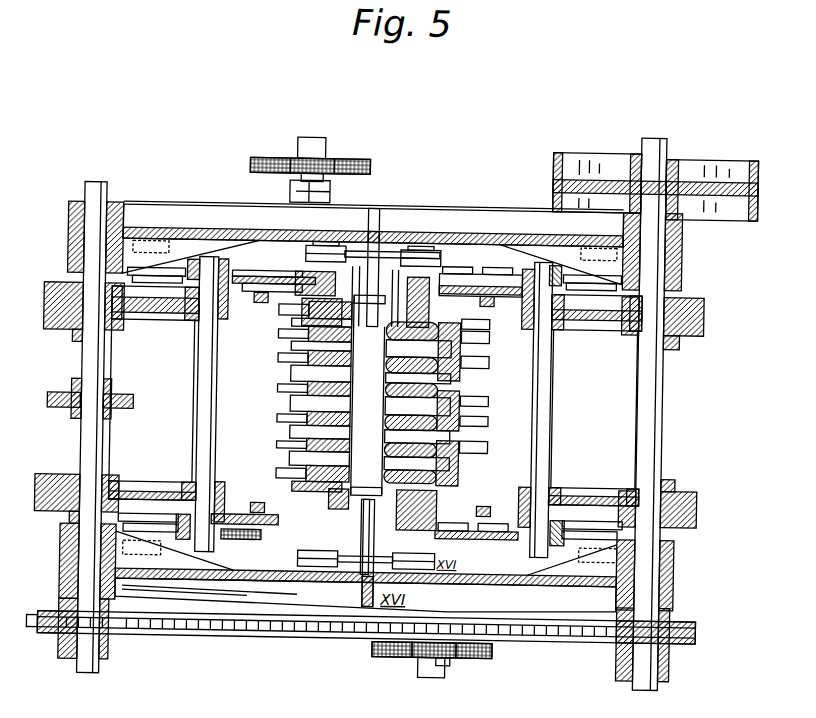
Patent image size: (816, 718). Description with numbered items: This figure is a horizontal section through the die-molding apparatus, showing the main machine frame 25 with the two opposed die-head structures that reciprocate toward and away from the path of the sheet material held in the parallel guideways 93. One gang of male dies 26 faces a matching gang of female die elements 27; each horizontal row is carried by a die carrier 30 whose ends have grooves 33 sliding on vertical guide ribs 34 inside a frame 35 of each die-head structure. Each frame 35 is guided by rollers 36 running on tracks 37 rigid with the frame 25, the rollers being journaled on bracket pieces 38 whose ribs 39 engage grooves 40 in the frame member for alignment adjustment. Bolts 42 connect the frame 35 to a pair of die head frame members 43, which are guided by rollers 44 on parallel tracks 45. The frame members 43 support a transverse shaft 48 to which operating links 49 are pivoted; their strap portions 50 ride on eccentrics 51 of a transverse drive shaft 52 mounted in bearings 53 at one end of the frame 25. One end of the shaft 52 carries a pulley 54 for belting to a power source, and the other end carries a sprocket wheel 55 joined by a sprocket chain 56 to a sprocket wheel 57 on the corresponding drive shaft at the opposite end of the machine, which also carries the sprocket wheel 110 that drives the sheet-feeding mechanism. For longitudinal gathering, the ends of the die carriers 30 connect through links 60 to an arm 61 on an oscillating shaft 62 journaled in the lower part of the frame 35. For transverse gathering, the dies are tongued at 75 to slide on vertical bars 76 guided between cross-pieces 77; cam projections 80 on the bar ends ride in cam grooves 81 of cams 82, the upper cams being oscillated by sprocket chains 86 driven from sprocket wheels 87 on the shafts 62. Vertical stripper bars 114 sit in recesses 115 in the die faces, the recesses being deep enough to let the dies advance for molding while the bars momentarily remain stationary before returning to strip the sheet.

The main machine frame 25 is at (200, 600).
The male dies 26 is at (340, 404).
The female die elements 27 is at (340, 463).
The die carrier 30 is at (340, 376).
The grooves 33 is at (382, 509).
The vertical guide ribs 34 is at (372, 536).
The frame 35 is at (450, 578).
The rollers 36 is at (330, 247).
The tracks 37 is at (378, 250).
The bracket pieces 38 is at (425, 258).
The ribs 39 is at (432, 274).
The grooves 40 is at (403, 299).
The bolts 42 is at (462, 275).
The die head frame members 43 is at (245, 275).
The rollers 44 is at (590, 586).
The tracks 45 is at (548, 567).
The transverse shaft 48 is at (195, 378).
The operating links 49 is at (150, 324).
The strap portions 50 is at (62, 292).
The eccentrics 51 is at (71, 338).
The transverse drive shaft 52 is at (80, 440).
The bearings 53 is at (65, 240).
The pulley 54 is at (700, 165).
The sprocket wheel 55 is at (699, 632).
The sprocket chain 56 is at (335, 640).
The sprocket wheel 57 is at (40, 630).
The links 60 is at (255, 306).
The arm 61 is at (265, 279).
The oscillating shaft 62 is at (307, 139).
The tongues 75 is at (300, 366).
The vertical bars 76 is at (307, 312).
The cross-pieces 77 is at (300, 448).
The cam projections 80 is at (470, 714).
The cam grooves 81 is at (300, 352).
The cams 82 is at (300, 394).
The sprocket chains 86 is at (340, 160).
The sprocket wheels 87 is at (280, 160).
The guideways 93 is at (367, 396).
The sprocket wheel 110 is at (133, 404).
The stripper bars 114 is at (332, 295).
The recesses 115 is at (392, 425).